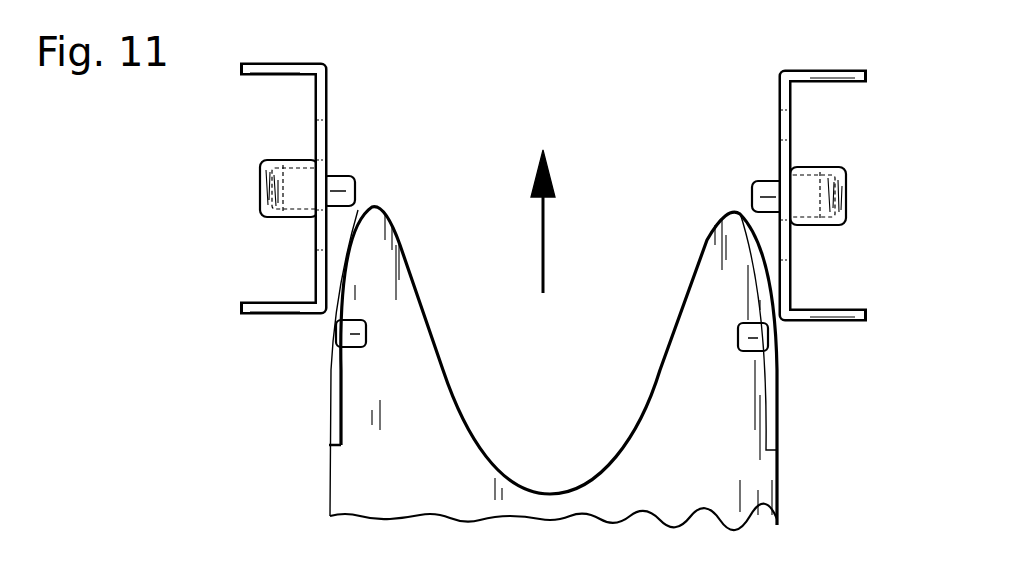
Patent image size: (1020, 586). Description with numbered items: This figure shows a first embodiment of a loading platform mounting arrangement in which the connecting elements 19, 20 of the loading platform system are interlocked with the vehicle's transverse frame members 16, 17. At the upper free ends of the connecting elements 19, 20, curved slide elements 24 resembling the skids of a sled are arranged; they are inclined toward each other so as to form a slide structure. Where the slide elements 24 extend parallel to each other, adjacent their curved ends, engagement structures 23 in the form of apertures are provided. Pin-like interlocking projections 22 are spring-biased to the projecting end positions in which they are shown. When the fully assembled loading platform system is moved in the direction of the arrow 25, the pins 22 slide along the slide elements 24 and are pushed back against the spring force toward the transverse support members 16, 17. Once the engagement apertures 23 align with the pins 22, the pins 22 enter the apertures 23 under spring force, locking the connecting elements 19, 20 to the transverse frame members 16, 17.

The transverse frame member 16 is at (278, 302).
The transverse frame member 17 is at (833, 308).
The connecting element 19 is at (616, 341).
The connecting element 20 is at (616, 341).
The interlocking pin 22 is at (338, 177).
The engagement aperture 23 is at (352, 326).
The curved slide element 24 is at (362, 212).
The arrow 25 is at (547, 230).